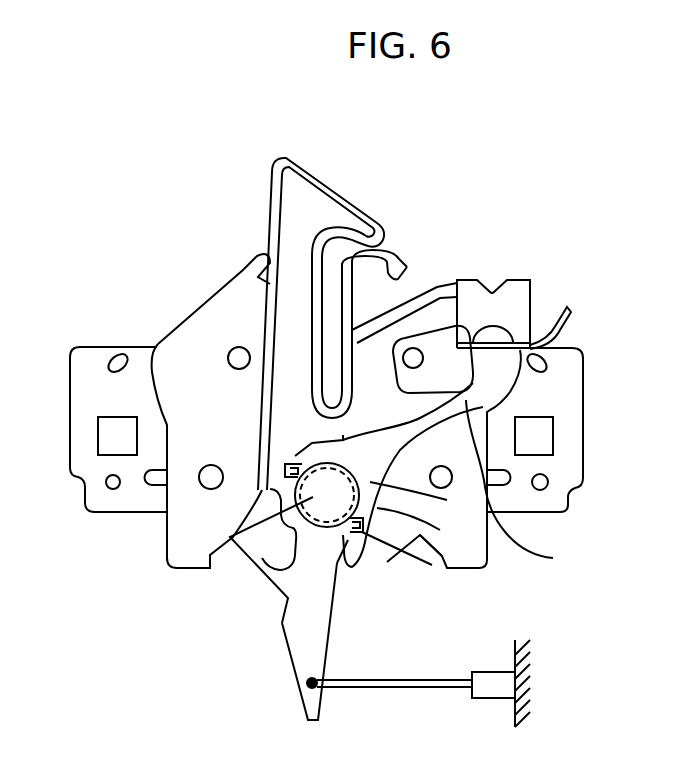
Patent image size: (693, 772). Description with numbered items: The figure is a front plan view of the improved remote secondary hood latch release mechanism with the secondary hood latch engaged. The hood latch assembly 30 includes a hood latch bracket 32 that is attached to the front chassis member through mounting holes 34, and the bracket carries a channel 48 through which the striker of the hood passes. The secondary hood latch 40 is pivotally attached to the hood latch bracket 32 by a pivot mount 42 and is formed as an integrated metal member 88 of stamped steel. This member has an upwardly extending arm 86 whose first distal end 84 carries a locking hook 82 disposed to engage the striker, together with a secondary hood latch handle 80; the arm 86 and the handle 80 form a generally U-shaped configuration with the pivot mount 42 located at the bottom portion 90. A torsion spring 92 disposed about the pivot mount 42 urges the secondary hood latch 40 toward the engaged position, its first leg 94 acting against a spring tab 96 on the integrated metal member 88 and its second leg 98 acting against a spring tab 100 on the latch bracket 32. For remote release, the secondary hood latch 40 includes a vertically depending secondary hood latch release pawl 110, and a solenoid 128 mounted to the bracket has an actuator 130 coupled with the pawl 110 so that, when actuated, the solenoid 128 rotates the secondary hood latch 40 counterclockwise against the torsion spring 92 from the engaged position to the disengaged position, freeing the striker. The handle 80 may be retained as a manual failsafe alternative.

The hood latch assembly 30 is at (547, 207).
The hood latch bracket 32 is at (570, 390).
The mounting holes 34 is at (98, 430).
The secondary hood latch 40 is at (432, 447).
The pivot mount 42 is at (280, 527).
The channel 48 is at (323, 293).
The secondary hood latch handle 80 is at (513, 307).
The locking hook 82 is at (352, 227).
The first distal end 84 is at (295, 180).
The upwardly extending arm 86 is at (288, 340).
The integrated metal member 88 is at (553, 558).
The bottom portion 90 is at (425, 500).
The torsion spring 92 is at (350, 468).
The first leg 94 is at (426, 532).
The spring tab 96 is at (400, 555).
The second leg 98 is at (312, 443).
The spring tab 100 is at (233, 537).
The secondary hood latch release pawl 110 is at (297, 660).
The solenoid 128 is at (492, 688).
The actuator 130 is at (357, 683).